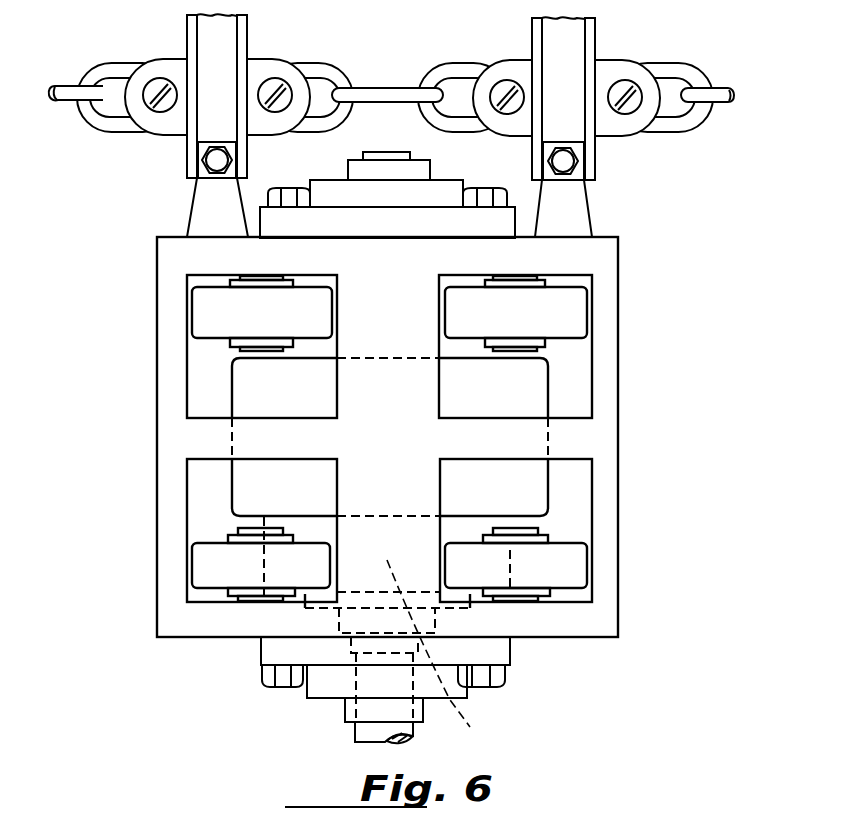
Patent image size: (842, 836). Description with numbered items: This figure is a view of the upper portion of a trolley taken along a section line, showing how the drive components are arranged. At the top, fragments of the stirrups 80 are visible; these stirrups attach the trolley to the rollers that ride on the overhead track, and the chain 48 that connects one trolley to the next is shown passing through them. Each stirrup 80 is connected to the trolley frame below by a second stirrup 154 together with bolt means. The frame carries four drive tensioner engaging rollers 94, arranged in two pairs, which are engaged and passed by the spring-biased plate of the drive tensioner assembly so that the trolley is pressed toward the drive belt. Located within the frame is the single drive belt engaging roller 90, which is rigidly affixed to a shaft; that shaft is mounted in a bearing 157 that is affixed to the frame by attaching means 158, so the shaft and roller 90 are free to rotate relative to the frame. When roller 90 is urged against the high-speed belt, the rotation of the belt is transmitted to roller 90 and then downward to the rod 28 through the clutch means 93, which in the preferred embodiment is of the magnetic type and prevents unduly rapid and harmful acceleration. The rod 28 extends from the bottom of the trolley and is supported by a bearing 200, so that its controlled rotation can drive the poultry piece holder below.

The rod 28 is at (367, 730).
The chain 48 is at (378, 95).
The stirrup 80 is at (225, 47).
The drive belt engaging roller 90 is at (490, 473).
The clutch means 93 is at (470, 727).
The drive tensioner engaging rollers 94 is at (217, 312).
The second stirrup 154 is at (203, 210).
The bearing 157 is at (393, 192).
The attaching means 158 is at (295, 197).
The bearing 200 is at (352, 710).